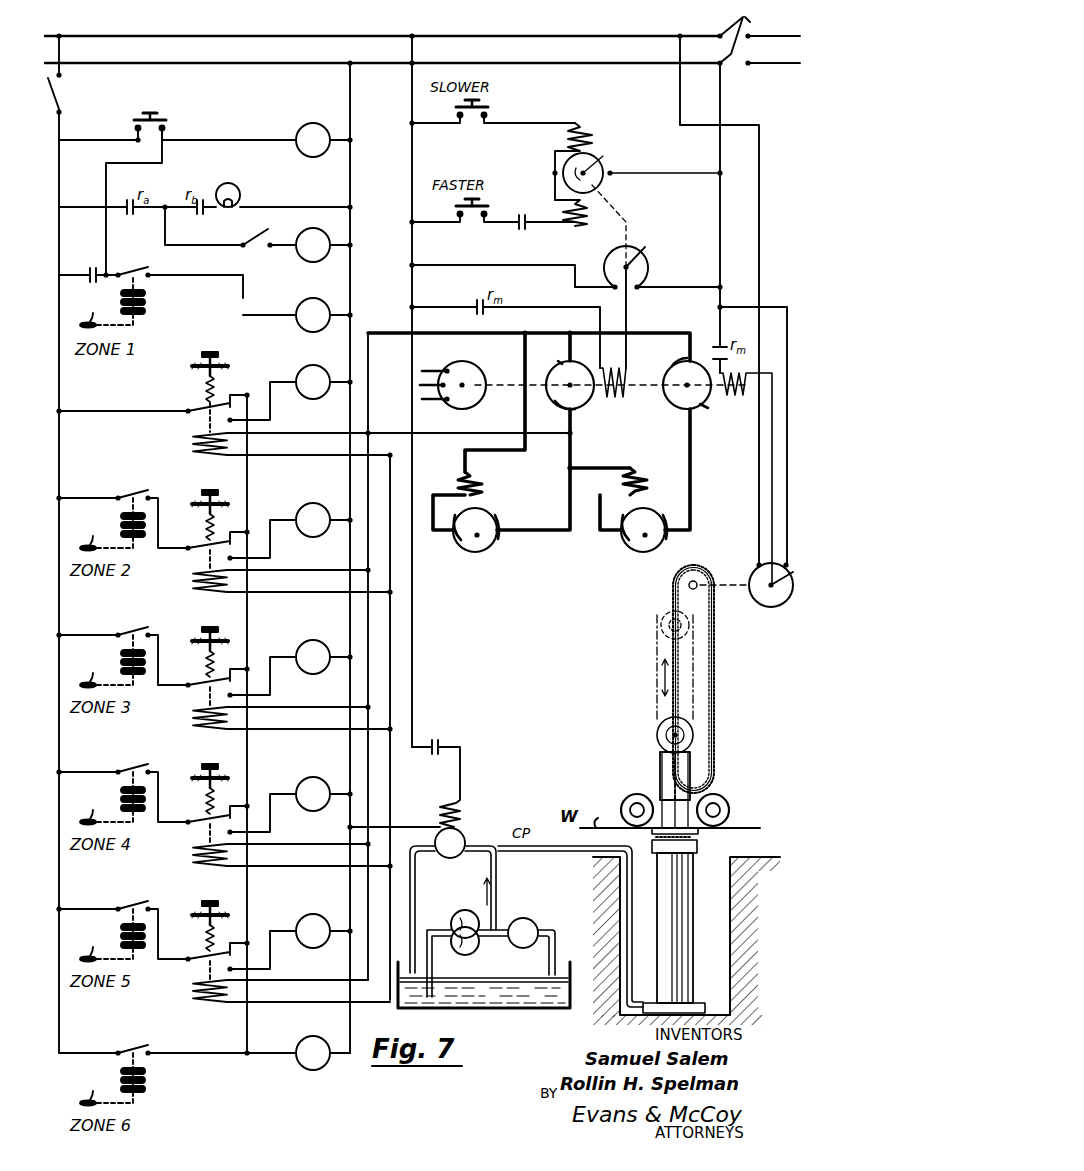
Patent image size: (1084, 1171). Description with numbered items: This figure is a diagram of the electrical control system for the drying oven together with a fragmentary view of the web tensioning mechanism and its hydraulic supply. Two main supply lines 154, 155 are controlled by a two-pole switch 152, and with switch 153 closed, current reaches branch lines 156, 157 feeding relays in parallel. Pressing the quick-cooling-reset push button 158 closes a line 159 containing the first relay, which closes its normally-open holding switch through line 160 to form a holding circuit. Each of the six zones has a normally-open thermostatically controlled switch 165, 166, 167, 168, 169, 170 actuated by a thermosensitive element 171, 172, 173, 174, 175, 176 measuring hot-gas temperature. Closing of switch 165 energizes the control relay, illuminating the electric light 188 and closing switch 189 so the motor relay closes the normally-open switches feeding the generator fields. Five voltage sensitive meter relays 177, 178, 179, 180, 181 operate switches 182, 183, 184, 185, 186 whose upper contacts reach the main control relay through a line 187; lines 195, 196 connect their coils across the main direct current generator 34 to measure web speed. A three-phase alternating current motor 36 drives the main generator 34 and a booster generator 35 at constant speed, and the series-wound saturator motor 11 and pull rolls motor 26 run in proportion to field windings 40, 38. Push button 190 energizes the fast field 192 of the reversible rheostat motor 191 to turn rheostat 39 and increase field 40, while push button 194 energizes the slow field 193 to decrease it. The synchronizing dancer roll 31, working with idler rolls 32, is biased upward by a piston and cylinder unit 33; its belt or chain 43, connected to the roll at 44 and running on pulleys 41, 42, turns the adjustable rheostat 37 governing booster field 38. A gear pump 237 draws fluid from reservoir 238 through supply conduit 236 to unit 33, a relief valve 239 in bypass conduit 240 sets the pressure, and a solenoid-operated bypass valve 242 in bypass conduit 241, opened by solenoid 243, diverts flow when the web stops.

The main supply line 154 is at (207, 36).
The main supply line 155 is at (268, 64).
The two-pole switch 152 is at (728, 19).
The switch 153 is at (62, 83).
The branch line 156 is at (59, 455).
The branch line 157 is at (350, 176).
The quick-cooling-reset push button 158 is at (158, 118).
The line 159 is at (209, 140).
The line 160 is at (106, 228).
The thermostatically controlled switch 165 is at (154, 266).
The electric light 188 is at (246, 196).
The switch 189 is at (255, 244).
The thermosensitive element 171 is at (112, 303).
The switch 182 is at (201, 408).
The voltage sensitive meter relay 177 is at (192, 440).
The line 187 is at (247, 748).
The line 195 is at (368, 632).
The line 196 is at (390, 668).
The thermostatically controlled switch 166 is at (150, 489).
The thermosensitive element 172 is at (108, 524).
The switch 183 is at (201, 545).
The voltage sensitive meter relay 178 is at (194, 577).
The thermostatically controlled switch 167 is at (143, 631).
The thermosensitive element 173 is at (108, 661).
The switch 184 is at (201, 682).
The voltage sensitive meter relay 179 is at (194, 720).
The thermostatically controlled switch 168 is at (143, 767).
The thermosensitive element 174 is at (108, 798).
The switch 185 is at (201, 819).
The voltage sensitive meter relay 180 is at (194, 857).
The thermostatically controlled switch 169 is at (143, 904).
The thermosensitive element 175 is at (108, 935).
The switch 186 is at (201, 956).
The voltage sensitive meter relay 181 is at (194, 996).
The thermostatically controlled switch 170 is at (138, 1043).
The thermosensitive element 176 is at (103, 1079).
The push button 194 is at (494, 104).
The slow field 193 is at (591, 122).
The reversible electric rheostat motor 191 is at (598, 156).
The push button 190 is at (458, 228).
The fast field 192 is at (576, 224).
The rheostat 39 is at (657, 262).
The three-phase alternating current motor 36 is at (480, 406).
The main direct current generator 34 is at (554, 405).
The field windings 40 is at (608, 397).
The booster generator 35 is at (666, 404).
The field windings 38 is at (728, 397).
The saturator motor 11 is at (482, 552).
The pull rolls motor 26 is at (630, 552).
The pulley 41 is at (700, 576).
The adjustable rheostat 37 is at (763, 614).
The belt or chain 43 is at (713, 674).
The synchronizing dancer roll 31 is at (660, 612).
The connection 44 is at (660, 734).
The pulley 42 is at (694, 776).
The idler rolls 32 is at (624, 802).
The piston and cylinder unit 33 is at (706, 931).
The solenoid 243 is at (440, 804).
The solenoid-operated bypass valve 242 is at (464, 832).
The bypass conduit 241 is at (414, 878).
The supply conduit 236 is at (498, 852).
The gear pump 237 is at (466, 907).
The relief valve 239 is at (534, 924).
The bypass conduit 240 is at (558, 946).
The reservoir 238 is at (510, 1008).